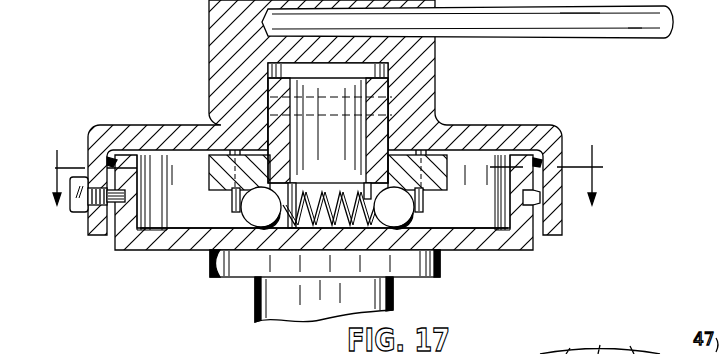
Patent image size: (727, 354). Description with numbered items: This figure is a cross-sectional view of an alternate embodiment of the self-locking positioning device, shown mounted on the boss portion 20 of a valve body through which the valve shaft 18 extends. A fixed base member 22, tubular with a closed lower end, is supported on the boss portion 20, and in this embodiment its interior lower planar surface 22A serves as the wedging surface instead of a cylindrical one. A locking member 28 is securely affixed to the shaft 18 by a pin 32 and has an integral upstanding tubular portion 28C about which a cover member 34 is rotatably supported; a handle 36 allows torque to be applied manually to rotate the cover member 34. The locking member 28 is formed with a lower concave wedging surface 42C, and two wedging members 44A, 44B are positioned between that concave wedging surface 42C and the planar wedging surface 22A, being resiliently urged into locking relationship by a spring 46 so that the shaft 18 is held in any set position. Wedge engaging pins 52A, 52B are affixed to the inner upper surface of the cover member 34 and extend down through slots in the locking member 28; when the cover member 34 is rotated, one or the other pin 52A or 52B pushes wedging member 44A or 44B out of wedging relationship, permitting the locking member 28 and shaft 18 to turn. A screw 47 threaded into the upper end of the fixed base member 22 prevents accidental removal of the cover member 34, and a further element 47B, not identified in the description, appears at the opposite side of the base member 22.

The shaft 18 is at (330, 180).
The boss portion 20 is at (270, 303).
The fixed base member 22 is at (516, 245).
The interior lower planar surface 22A is at (499, 230).
The locking member 28 is at (213, 163).
The upstanding tubular portion 28C is at (280, 117).
The pin 32 is at (387, 98).
The cover member 34 is at (428, 116).
The handle 36 is at (629, 38).
The concave wedging surface 42C is at (361, 187).
The wedging member 44A is at (254, 208).
The wedging member 44B is at (486, 230).
The spring 46 is at (303, 193).
The screw 47 is at (82, 215).
The bolt 47B is at (537, 205).
The wedge engaging pin 52A is at (232, 204).
The wedge engaging pin 52B is at (423, 205).